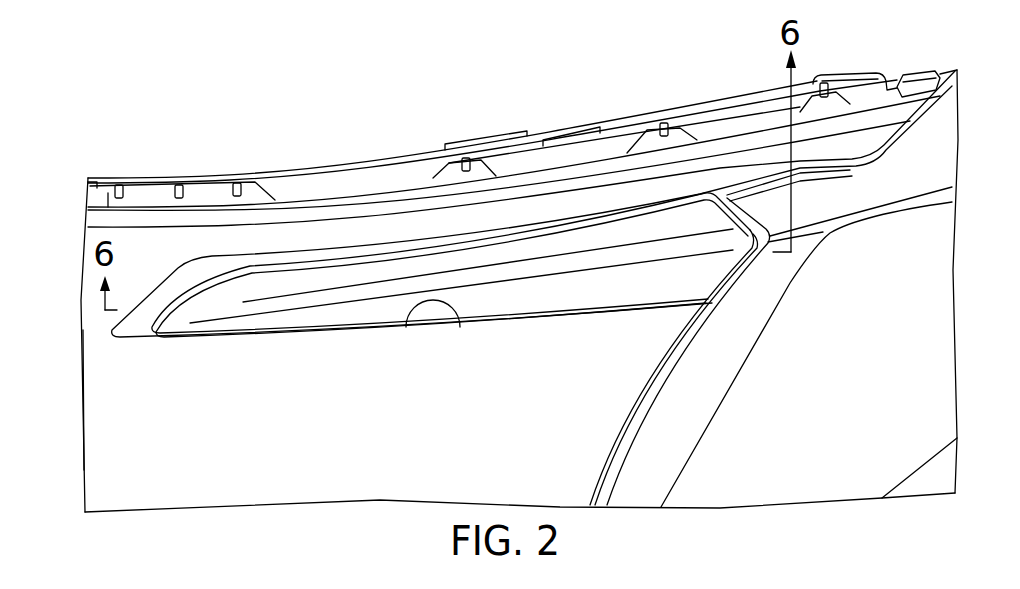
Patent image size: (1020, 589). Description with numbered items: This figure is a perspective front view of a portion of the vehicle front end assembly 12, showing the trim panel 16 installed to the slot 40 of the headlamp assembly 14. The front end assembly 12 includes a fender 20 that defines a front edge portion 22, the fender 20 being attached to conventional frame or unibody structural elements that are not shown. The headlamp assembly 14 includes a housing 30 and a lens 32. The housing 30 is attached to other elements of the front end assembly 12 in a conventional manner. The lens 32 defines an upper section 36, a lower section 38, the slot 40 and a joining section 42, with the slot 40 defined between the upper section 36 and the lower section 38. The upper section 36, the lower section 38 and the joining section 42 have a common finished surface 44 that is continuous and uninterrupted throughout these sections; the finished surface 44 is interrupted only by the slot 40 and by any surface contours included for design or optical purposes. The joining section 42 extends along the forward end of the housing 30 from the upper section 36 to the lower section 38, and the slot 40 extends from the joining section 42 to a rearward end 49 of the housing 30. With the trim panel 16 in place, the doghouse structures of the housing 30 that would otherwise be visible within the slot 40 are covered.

The vehicle front end assembly 12 is at (618, 76).
The headlamp assembly 14 is at (357, 184).
The trim panel 16 is at (610, 262).
The fender 20 is at (803, 453).
The front edge portion 22 is at (718, 284).
The housing 30 is at (447, 178).
The lens 32 is at (610, 356).
The upper section 36 is at (308, 238).
The lower section 38 is at (177, 368).
The slot 40 is at (462, 328).
The joining section 42 is at (92, 318).
The finished surface 44 is at (570, 428).
The rearward end 49 is at (657, 392).